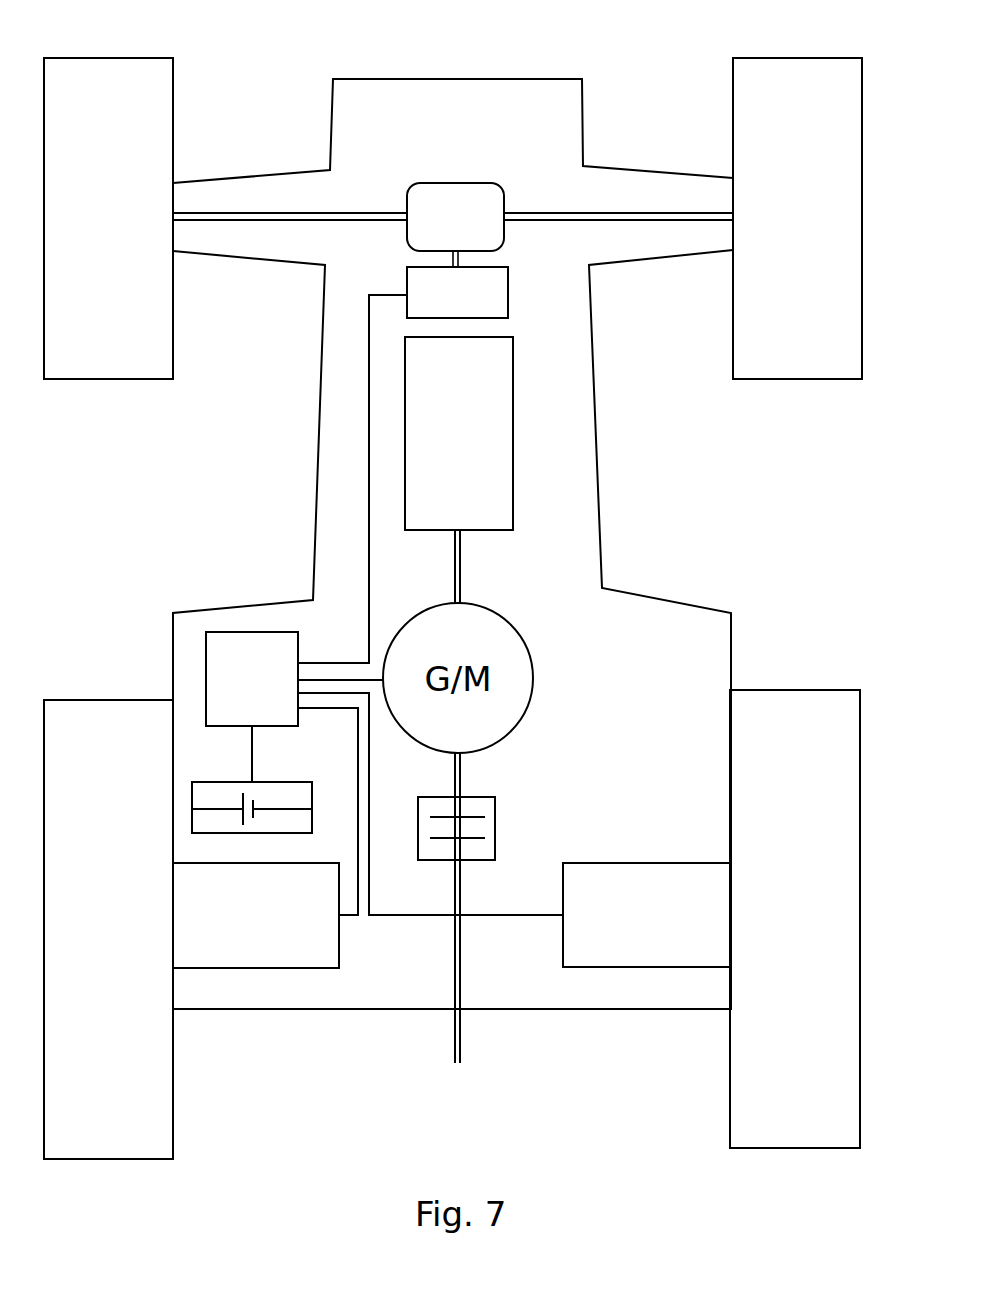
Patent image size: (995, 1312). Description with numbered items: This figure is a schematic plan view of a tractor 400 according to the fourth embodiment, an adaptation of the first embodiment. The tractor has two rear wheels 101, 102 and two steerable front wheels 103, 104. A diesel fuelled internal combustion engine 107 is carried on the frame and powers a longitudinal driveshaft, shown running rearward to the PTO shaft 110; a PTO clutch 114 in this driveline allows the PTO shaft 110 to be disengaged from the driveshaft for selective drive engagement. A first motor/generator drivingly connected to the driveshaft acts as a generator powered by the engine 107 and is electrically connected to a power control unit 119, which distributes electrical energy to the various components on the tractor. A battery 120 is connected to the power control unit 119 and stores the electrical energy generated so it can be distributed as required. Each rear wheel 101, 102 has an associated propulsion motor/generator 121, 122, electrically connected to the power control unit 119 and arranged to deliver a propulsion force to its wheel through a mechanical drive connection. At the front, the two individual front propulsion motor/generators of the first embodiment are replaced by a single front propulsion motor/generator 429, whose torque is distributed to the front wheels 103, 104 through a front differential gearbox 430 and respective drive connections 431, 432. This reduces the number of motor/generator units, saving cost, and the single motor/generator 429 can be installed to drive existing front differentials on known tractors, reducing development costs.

The tractor 400 is at (296, 66).
The rear wheel 101 is at (75, 1160).
The rear wheel 102 is at (815, 1149).
The front wheel 103 is at (75, 380).
The front wheel 104 is at (822, 380).
The internal combustion engine 107 is at (480, 450).
The PTO shaft 110 is at (462, 1030).
The PTO clutch 114 is at (495, 812).
The power control unit 119 is at (232, 699).
The battery 120 is at (316, 768).
The propulsion motor/generator 121 is at (275, 969).
The propulsion motor/generator 122 is at (643, 968).
The single front propulsion motor/generator 429 is at (508, 298).
The front differential gearbox 430 is at (473, 200).
The drive connection 431 is at (258, 212).
The drive connection 432 is at (545, 212).